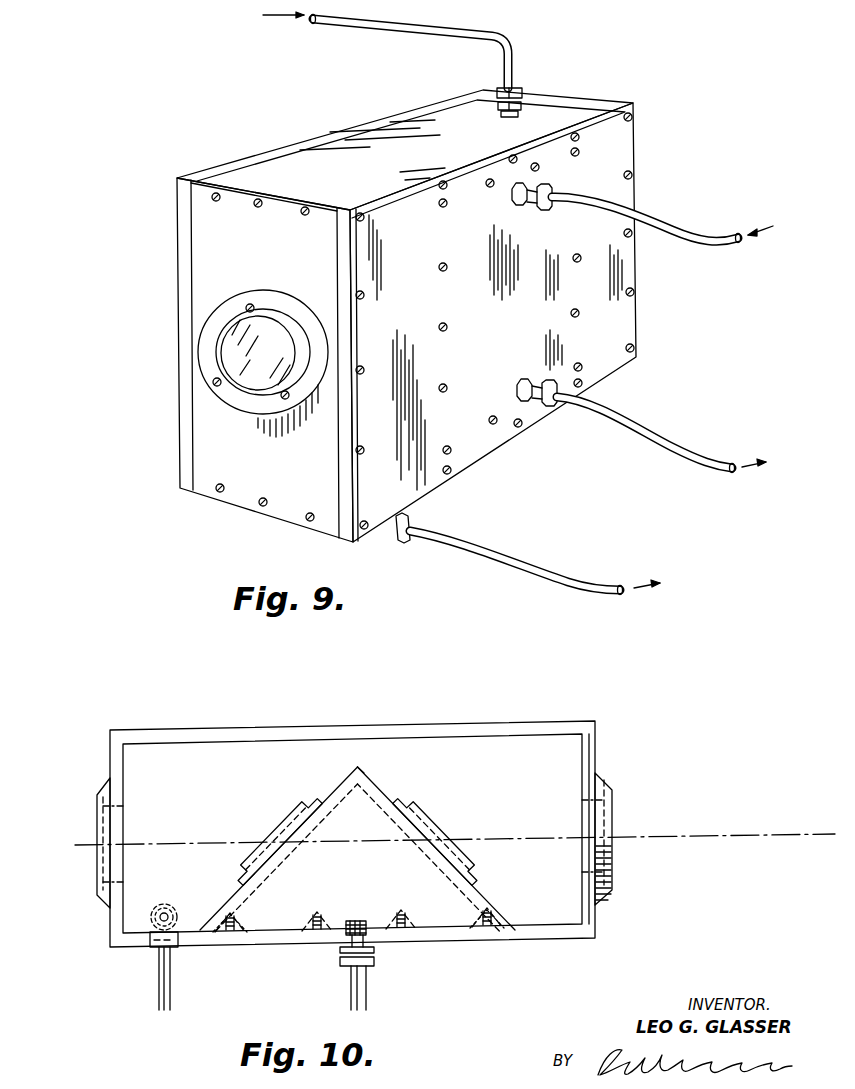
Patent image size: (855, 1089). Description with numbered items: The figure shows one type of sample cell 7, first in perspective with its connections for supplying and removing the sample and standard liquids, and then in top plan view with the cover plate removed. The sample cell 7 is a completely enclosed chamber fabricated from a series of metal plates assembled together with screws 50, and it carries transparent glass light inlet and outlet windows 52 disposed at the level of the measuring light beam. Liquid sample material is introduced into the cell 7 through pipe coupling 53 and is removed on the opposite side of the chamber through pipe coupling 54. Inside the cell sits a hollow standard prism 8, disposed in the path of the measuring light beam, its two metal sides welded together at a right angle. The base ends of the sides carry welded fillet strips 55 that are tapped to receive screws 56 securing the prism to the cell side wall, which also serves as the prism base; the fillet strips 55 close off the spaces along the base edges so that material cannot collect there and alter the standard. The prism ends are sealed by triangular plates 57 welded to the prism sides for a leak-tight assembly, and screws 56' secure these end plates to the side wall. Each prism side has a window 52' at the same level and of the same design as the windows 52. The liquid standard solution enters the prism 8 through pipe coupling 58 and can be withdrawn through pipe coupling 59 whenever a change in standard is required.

In FIG. 10, the sample cell 7 is at (268, 733).
In FIG. 10, the standard prism 8 is at (341, 783).
In FIG. 9, the screws 50 is at (360, 220).
In FIG. 9, the light inlet and outlet windows 52 is at (231, 363).
In FIG. 10, the light inlet and outlet windows 52 is at (355, 840).
In FIG. 10, the prism windows 52' is at (354, 841).
In FIG. 9, the pipe coupling 53 is at (520, 92).
In FIG. 9, the pipe coupling 54 is at (410, 522).
In FIG. 10, the pipe coupling 54 is at (151, 945).
In FIG. 10, the welded fillet strips 55 is at (242, 936).
In FIG. 9, the screws 56 is at (423, 321).
In FIG. 10, the screws 56 is at (362, 941).
In FIG. 9, the screws 56' is at (490, 282).
In FIG. 10, the screws 56' is at (370, 945).
In FIG. 10, the triangular plates 57 is at (366, 812).
In FIG. 9, the pipe coupling 58 is at (541, 211).
In FIG. 10, the pipe coupling 58 is at (345, 976).
In FIG. 9, the pipe coupling 59 is at (568, 396).